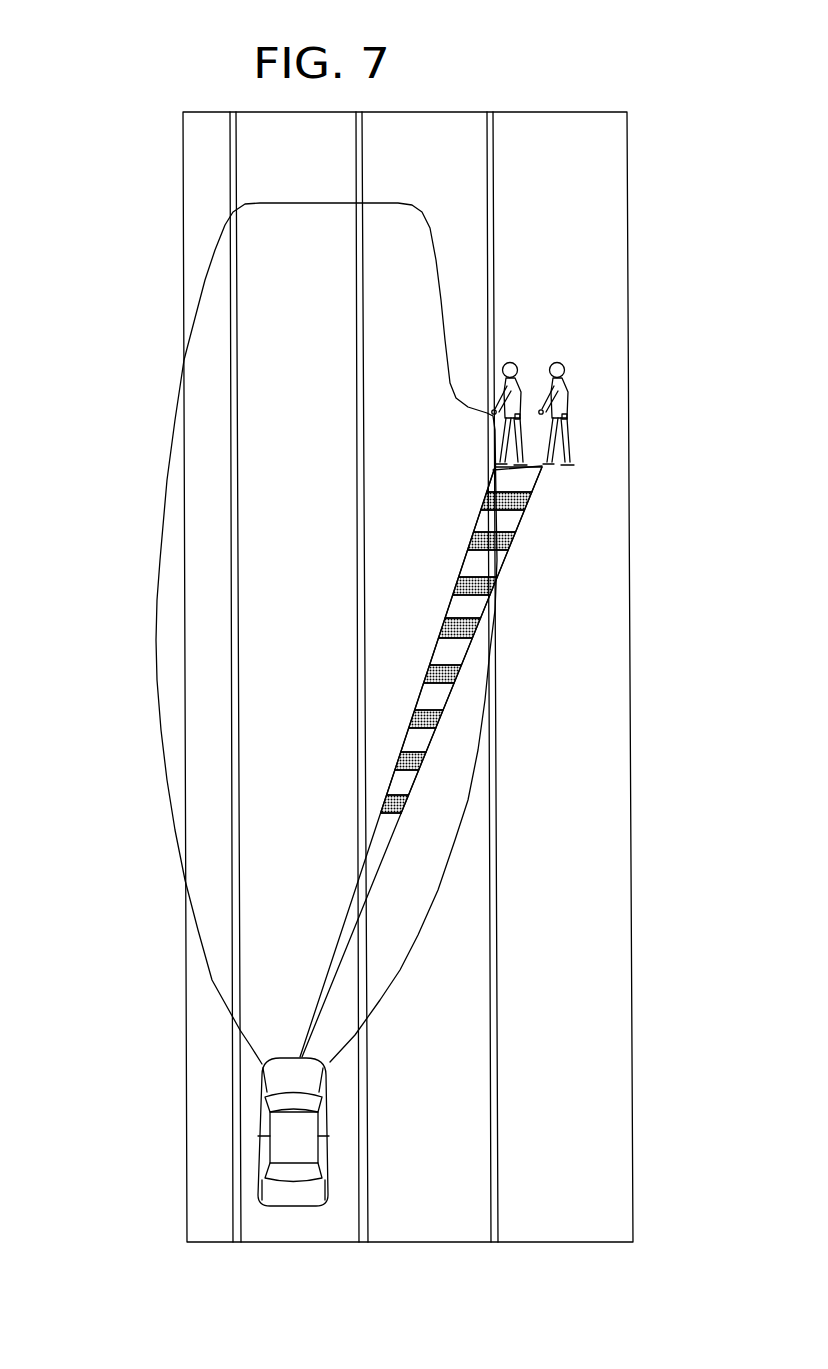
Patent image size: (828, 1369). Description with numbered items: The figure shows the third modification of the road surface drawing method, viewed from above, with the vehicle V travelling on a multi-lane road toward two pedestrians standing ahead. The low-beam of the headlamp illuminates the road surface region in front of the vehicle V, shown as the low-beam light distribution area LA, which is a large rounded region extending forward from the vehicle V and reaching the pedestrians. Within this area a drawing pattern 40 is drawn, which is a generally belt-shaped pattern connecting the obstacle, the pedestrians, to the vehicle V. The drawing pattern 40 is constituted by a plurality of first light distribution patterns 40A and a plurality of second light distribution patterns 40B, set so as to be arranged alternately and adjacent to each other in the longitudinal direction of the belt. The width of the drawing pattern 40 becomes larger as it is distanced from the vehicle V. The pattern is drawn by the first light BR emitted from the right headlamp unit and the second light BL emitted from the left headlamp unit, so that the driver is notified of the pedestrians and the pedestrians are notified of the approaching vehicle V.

The drawing pattern 40 is at (530, 548).
The first light distribution patterns 40A is at (478, 540).
The second light distribution patterns 40B is at (505, 523).
The first light BR is at (378, 809).
The second light BL is at (372, 860).
The low-beam light distribution area LA is at (157, 598).
The vehicle V is at (248, 1148).